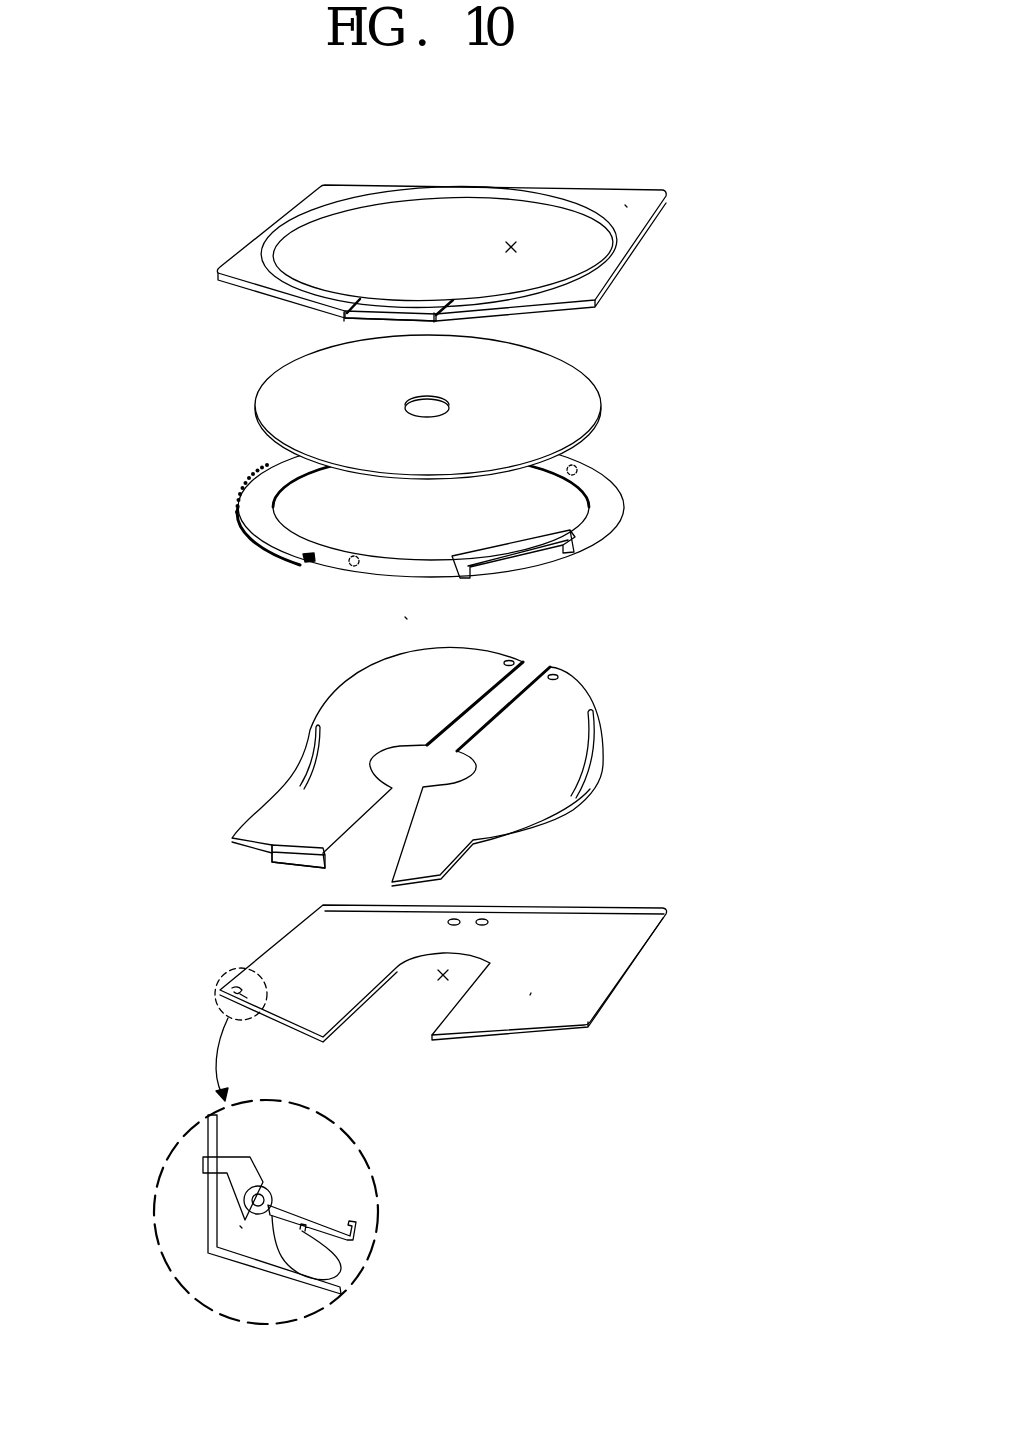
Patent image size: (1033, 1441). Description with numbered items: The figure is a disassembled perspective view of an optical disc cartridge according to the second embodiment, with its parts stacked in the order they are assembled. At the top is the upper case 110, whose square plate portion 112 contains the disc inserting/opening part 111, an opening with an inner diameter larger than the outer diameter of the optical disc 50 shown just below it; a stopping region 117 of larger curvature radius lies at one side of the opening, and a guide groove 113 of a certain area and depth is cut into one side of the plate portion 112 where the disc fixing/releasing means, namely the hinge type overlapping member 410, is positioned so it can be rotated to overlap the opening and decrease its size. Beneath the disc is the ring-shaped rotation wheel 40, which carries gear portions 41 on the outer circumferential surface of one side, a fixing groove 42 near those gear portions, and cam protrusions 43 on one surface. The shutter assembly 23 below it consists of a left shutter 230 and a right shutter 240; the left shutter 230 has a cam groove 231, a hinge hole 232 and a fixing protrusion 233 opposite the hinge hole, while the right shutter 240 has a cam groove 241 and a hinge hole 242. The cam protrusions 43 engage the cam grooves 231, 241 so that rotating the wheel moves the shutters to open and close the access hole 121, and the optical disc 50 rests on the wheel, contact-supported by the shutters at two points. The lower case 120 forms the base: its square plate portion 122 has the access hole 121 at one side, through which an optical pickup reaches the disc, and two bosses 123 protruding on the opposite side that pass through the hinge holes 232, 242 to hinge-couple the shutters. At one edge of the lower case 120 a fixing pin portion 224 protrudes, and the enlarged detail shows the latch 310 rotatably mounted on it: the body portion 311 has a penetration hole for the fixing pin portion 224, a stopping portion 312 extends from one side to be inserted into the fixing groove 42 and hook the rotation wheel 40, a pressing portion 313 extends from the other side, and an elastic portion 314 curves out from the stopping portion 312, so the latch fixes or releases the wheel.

The upper case 110 is at (628, 259).
The disc inserting/opening part 111 is at (511, 247).
The plate portion 112 is at (625, 205).
The guide groove 113 is at (349, 300).
The stopping region 117 is at (457, 188).
The hinge type overlapping member 410 is at (349, 320).
The optical disc 50 is at (603, 400).
The rotation wheel 40 is at (622, 508).
The gear portions 41 is at (245, 488).
The fixing groove 42 is at (304, 557).
The cam protrusions 43 is at (578, 471).
The first fixing protrusion 23 is at (407, 618).
The left shutter 230 is at (346, 670).
The cam groove 231 is at (305, 727).
The hinge hole 232 is at (511, 660).
The fixing protrusion 233 is at (283, 848).
The right shutter 240 is at (596, 801).
The cam groove 241 is at (600, 758).
The hinge hole 242 is at (555, 674).
The lower case 120 is at (642, 975).
The access hole 121 is at (446, 980).
The plate portion 122 is at (530, 995).
The bosses 123 is at (485, 919).
The latch 310 is at (209, 1253).
The body portion 311 is at (257, 1207).
The stopping portion 312 is at (353, 1233).
The pressing portion 313 is at (205, 1165).
The elastic portion 314 is at (343, 1263).
The fixing pin portion 224 is at (240, 1226).